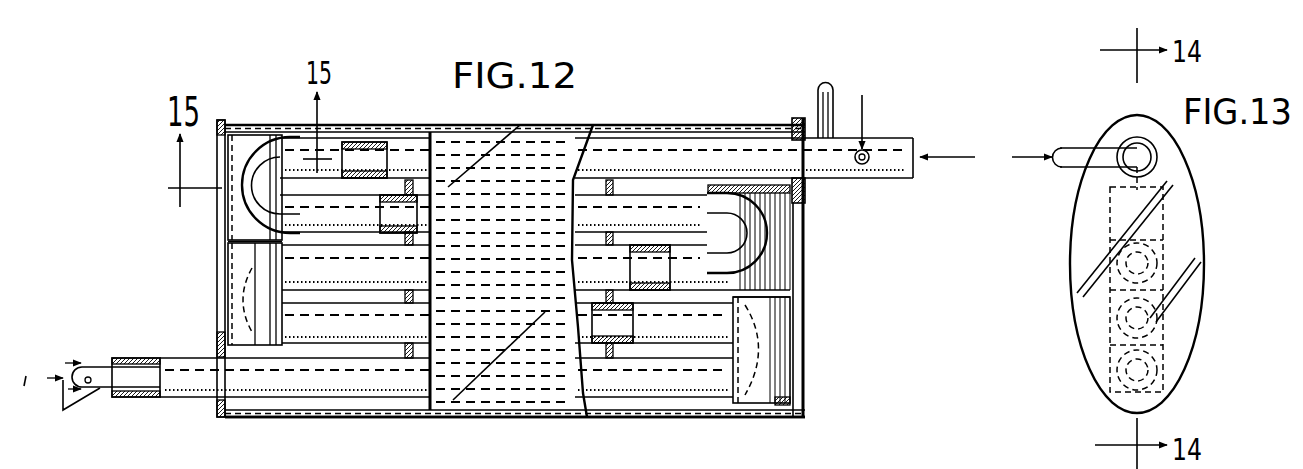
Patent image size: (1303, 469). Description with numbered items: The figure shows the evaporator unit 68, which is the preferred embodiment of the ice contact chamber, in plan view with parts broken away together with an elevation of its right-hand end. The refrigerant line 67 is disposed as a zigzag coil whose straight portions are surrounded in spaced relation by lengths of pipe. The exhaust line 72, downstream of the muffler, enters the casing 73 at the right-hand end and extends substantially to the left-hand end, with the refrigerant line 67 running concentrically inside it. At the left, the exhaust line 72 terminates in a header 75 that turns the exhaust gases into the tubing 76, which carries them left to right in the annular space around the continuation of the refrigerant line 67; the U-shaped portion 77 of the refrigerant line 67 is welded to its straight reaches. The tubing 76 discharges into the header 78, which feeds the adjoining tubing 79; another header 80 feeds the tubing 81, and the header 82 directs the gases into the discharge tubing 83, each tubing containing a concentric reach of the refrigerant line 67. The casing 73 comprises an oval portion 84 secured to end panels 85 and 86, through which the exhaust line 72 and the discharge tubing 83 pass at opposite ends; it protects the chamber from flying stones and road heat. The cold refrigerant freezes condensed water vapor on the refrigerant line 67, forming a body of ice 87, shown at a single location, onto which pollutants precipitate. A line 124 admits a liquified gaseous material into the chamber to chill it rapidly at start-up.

In FIG. 12, the refrigerant line 67 is at (864, 165).
In FIG. 13, the refrigerant line 67 is at (1077, 166).
In FIG. 12, the evaporator unit 68 is at (732, 421).
In FIG. 13, the evaporator unit 68 is at (1060, 301).
In FIG. 12, the exhaust line 72 is at (887, 140).
In FIG. 13, the exhaust line 72 is at (1160, 152).
In FIG. 12, the casing 73 is at (712, 123).
In FIG. 13, the casing 73 is at (1202, 296).
In FIG. 12, the header 75 is at (230, 228).
In FIG. 12, the tubing 76 is at (243, 268).
In FIG. 13, the tubing 76 is at (1112, 228).
In FIG. 12, the U-shaped portion 77 is at (262, 165).
In FIG. 12, the header 78 is at (765, 214).
In FIG. 13, the header 78 is at (1163, 236).
In FIG. 12, the tubing 79 is at (722, 290).
In FIG. 13, the tubing 79 is at (1158, 258).
In FIG. 12, the header 80 is at (238, 310).
In FIG. 12, the tubing 81 is at (723, 333).
In FIG. 13, the tubing 81 is at (1122, 328).
In FIG. 12, the header 82 is at (790, 406).
In FIG. 13, the header 82 is at (1160, 367).
In FIG. 12, the discharge tubing 83 is at (167, 358).
In FIG. 13, the discharge tubing 83 is at (1112, 374).
In FIG. 12, the oval portion 84 is at (530, 404).
In FIG. 12, the end panel 85 is at (800, 295).
In FIG. 12, the end panel 86 is at (227, 253).
In FIG. 12, the body of ice 87 is at (368, 148).
In FIG. 12, the line 124 is at (818, 93).